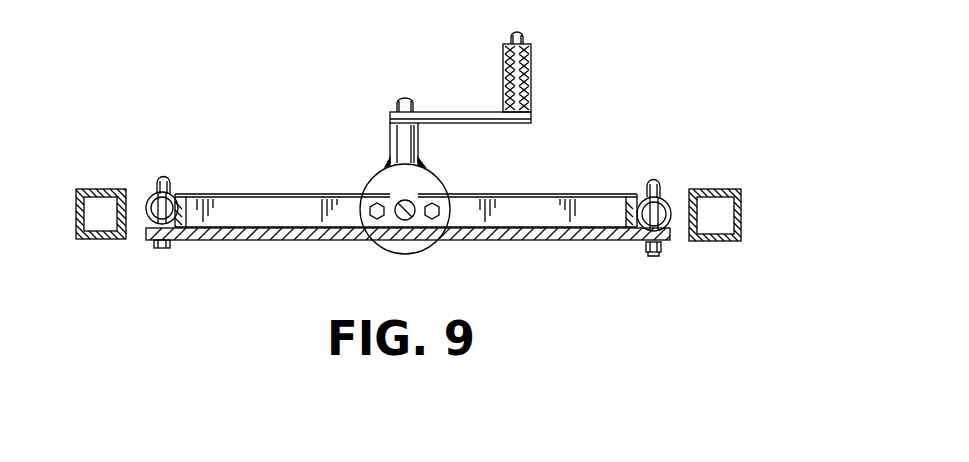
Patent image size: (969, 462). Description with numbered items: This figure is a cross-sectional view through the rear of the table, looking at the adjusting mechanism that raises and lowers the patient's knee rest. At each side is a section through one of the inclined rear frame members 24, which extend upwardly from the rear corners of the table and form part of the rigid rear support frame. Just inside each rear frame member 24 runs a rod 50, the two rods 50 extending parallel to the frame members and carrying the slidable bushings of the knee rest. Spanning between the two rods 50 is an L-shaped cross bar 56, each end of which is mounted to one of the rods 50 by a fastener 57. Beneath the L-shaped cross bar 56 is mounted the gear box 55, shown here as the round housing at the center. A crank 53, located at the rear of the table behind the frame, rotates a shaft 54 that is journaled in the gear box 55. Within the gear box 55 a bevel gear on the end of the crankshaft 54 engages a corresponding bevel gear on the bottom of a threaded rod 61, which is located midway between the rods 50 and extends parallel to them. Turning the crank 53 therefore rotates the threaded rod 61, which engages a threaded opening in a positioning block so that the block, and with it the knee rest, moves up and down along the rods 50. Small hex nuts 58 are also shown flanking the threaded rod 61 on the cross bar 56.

The inclined rear frame member 24 is at (725, 242).
The rod 50 is at (672, 222).
The crank 53 is at (532, 72).
The shaft 54 is at (408, 143).
The gear box 55 is at (367, 226).
The L-shaped cross bar 56 is at (252, 208).
The fastener 57 is at (654, 183).
The hex nut 58 is at (435, 205).
The threaded rod 61 is at (408, 218).